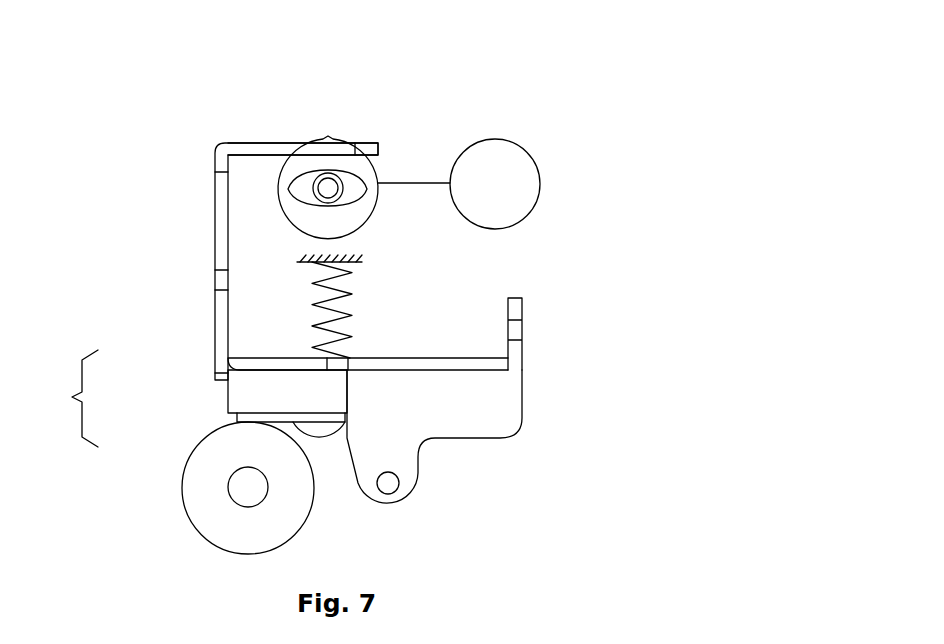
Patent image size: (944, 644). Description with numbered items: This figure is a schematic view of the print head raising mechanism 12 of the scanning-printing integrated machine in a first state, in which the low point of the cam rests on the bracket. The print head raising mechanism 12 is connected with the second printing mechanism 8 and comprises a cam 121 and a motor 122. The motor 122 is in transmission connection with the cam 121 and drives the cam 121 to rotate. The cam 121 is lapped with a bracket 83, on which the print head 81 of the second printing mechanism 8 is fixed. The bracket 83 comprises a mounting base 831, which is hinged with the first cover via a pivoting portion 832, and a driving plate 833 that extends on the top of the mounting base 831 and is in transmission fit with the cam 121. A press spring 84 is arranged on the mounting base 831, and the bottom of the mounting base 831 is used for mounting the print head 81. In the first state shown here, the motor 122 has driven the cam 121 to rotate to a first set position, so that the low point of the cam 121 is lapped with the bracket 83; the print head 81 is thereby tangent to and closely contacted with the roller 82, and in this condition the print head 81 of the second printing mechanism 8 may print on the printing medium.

The second printing mechanism 8 is at (68, 398).
The print head 81 is at (252, 400).
The roller 82 is at (210, 478).
The bracket 83 is at (203, 297).
The mounting base 831 is at (487, 363).
The pivoting portion 832 is at (407, 477).
The driving plate 833 is at (255, 148).
The press spring 84 is at (328, 302).
The print head raising mechanism 12 is at (563, 168).
The cam 121 is at (353, 182).
The motor 122 is at (488, 150).